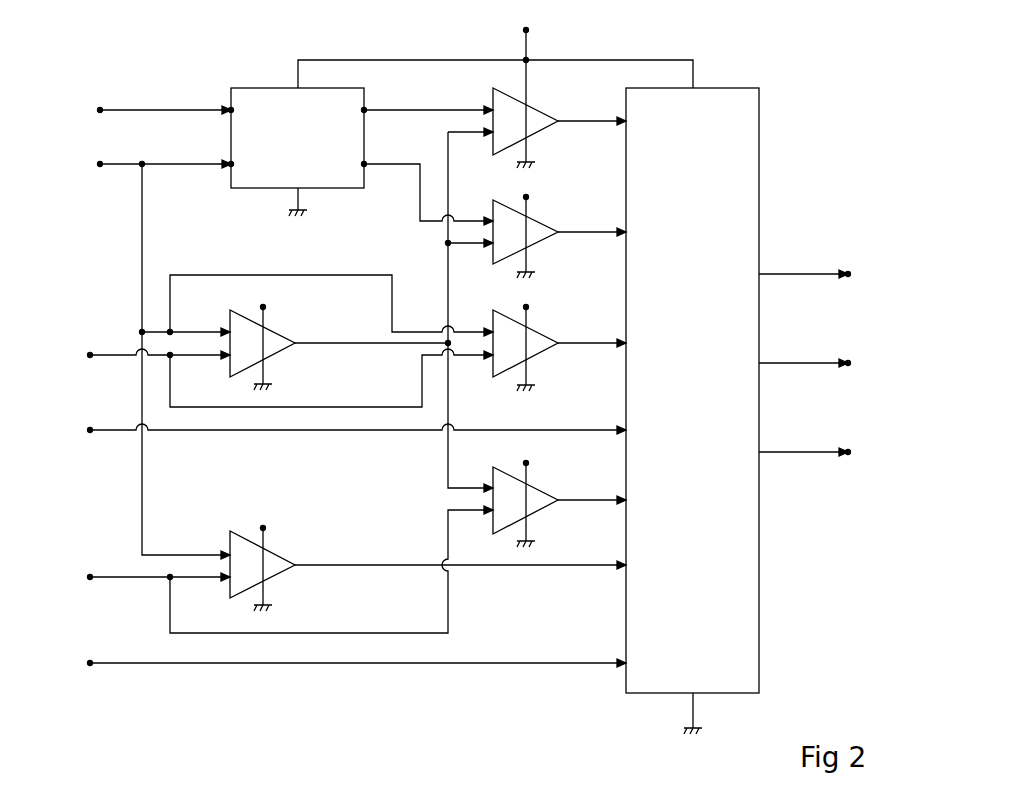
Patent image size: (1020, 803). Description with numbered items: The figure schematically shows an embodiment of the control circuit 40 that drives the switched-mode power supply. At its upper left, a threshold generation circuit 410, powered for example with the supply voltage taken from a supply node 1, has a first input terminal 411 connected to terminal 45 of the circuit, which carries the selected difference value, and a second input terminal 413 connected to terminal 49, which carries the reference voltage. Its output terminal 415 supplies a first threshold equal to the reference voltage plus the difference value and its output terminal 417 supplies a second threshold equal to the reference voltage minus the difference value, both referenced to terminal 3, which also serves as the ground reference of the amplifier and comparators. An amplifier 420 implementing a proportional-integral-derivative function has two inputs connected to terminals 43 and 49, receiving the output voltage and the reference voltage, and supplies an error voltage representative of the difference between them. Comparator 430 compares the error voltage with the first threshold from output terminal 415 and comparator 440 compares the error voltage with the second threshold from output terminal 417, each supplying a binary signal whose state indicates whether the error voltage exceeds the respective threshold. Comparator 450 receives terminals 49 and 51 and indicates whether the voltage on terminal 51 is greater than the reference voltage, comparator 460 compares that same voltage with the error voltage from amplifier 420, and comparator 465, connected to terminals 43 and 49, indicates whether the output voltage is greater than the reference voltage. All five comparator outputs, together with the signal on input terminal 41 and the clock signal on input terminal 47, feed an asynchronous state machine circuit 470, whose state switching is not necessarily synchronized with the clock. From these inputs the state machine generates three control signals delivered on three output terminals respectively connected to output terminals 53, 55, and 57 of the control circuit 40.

The supply voltage node 1 is at (530, 30).
The terminal 3 is at (300, 198).
The control circuit 40 is at (462, 390).
The input terminal 41 is at (90, 663).
The terminal 43 is at (90, 355).
The terminal 45 is at (100, 110).
The input terminal 47 is at (90, 430).
The terminal 49 is at (100, 164).
The terminal 51 is at (90, 577).
The output terminal 53 is at (848, 452).
The output terminal 55 is at (848, 274).
The output terminal 57 is at (848, 363).
The threshold generation circuit 410 is at (462, 135).
The input terminal 411 is at (231, 110).
The generator second input 413 is at (231, 164).
The output terminal 415 is at (364, 110).
The output terminal 417 is at (364, 164).
The amplifier 420 is at (240, 321).
The comparator 430 is at (535, 110).
The comparator 440 is at (498, 265).
The comparator 450 is at (241, 541).
The comparator 460 is at (505, 479).
The comparator 465 is at (497, 372).
The asynchronous state machine circuit 470 is at (759, 97).